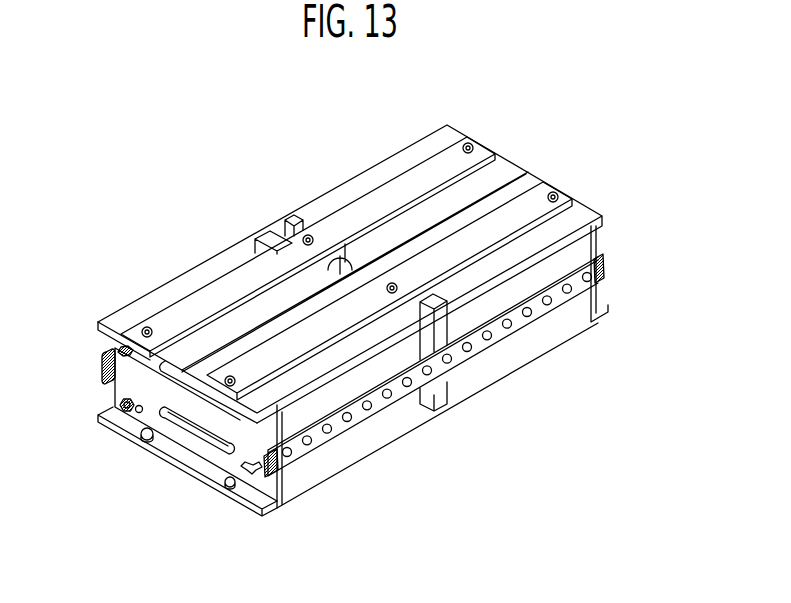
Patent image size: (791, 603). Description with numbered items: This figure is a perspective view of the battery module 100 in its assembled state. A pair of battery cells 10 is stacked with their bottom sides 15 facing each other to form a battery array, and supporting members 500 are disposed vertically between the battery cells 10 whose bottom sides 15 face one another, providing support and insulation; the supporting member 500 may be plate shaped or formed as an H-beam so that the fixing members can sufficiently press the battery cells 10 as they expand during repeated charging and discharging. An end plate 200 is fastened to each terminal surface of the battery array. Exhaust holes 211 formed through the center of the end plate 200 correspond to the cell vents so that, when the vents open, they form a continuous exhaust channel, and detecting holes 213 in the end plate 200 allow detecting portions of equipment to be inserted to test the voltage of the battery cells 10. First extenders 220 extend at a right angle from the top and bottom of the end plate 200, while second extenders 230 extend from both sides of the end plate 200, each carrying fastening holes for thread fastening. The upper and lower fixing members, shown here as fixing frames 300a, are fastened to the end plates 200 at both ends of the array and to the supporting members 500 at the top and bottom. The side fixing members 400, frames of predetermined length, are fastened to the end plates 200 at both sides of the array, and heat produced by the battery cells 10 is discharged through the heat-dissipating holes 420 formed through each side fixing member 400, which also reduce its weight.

The battery module 100 is at (143, 142).
The battery cell 10 is at (193, 276).
The bottom side 15 is at (420, 413).
The end plate 200 is at (532, 174).
The exhaust hole 211 is at (195, 430).
The detecting hole 213 is at (136, 415).
The first extender 220 is at (268, 503).
The second extender 230 is at (101, 368).
The fixing frame 300a is at (232, 263).
The side fixing member 400 is at (600, 257).
The heat-dissipating hole 420 is at (556, 302).
The supporting member 500 is at (342, 242).